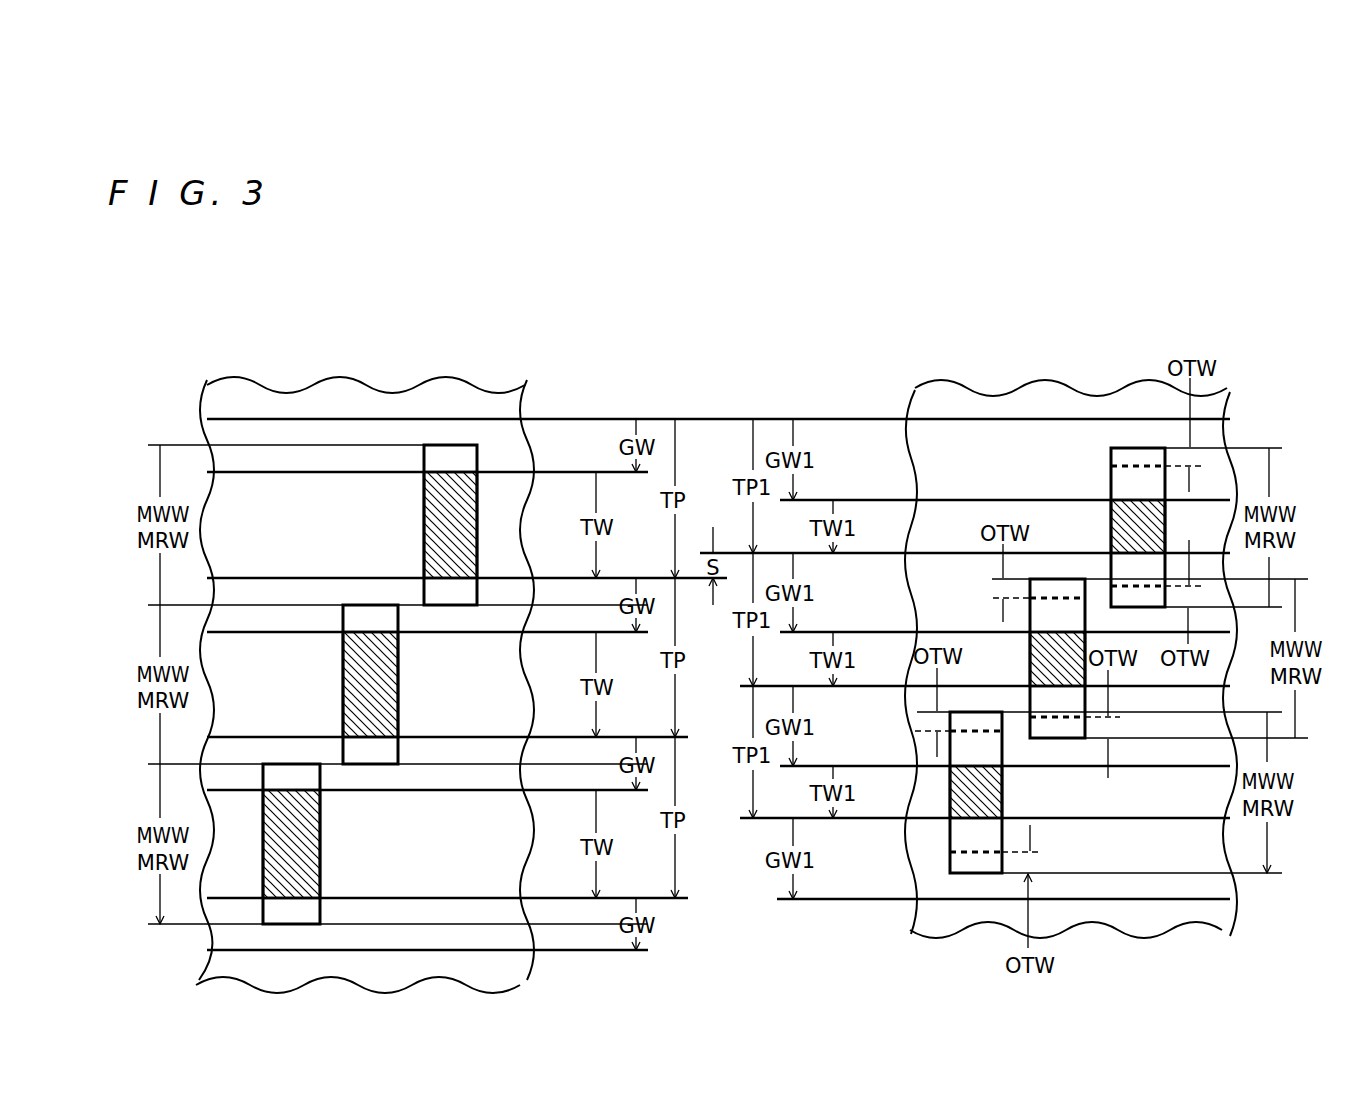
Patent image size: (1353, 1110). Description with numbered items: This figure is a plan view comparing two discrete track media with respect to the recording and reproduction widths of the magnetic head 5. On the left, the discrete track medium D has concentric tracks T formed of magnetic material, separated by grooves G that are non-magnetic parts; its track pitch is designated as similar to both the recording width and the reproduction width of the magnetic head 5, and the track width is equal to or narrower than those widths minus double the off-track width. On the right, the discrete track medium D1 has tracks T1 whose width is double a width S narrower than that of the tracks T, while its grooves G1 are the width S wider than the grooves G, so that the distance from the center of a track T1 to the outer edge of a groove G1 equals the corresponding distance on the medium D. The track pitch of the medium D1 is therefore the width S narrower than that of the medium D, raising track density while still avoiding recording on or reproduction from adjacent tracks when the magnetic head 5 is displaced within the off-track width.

The magnetic head 5 is at (424, 518).
The discrete track medium D is at (371, 336).
The discrete track medium D1 is at (1075, 338).
The track T is at (502, 527).
The groove G is at (493, 446).
The track T1 is at (937, 525).
The groove G1 is at (937, 457).